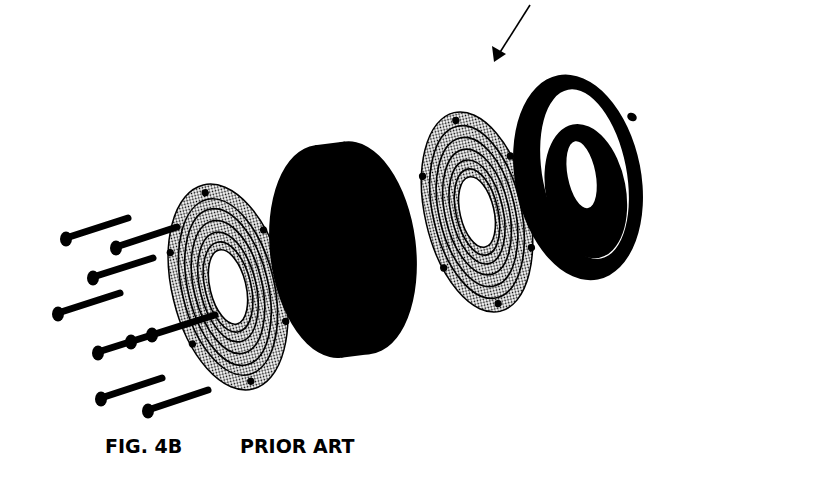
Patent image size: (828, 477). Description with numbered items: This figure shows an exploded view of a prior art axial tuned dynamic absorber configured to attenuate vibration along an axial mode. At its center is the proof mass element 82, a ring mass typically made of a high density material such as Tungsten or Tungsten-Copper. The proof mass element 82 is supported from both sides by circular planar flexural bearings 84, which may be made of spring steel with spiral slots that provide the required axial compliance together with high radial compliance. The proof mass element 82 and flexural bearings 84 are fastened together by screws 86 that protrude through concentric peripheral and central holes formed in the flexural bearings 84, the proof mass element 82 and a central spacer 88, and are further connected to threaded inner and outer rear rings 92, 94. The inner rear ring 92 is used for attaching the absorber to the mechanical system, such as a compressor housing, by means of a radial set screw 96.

The proof mass element 82 is at (383, 350).
The circular planar flexural bearings 84 is at (187, 190).
The screws 86 is at (127, 219).
The central spacer 88 is at (327, 347).
The inner rear ring 92 is at (597, 230).
The outer rear ring 94 is at (641, 250).
The radial set screw 96 is at (636, 120).